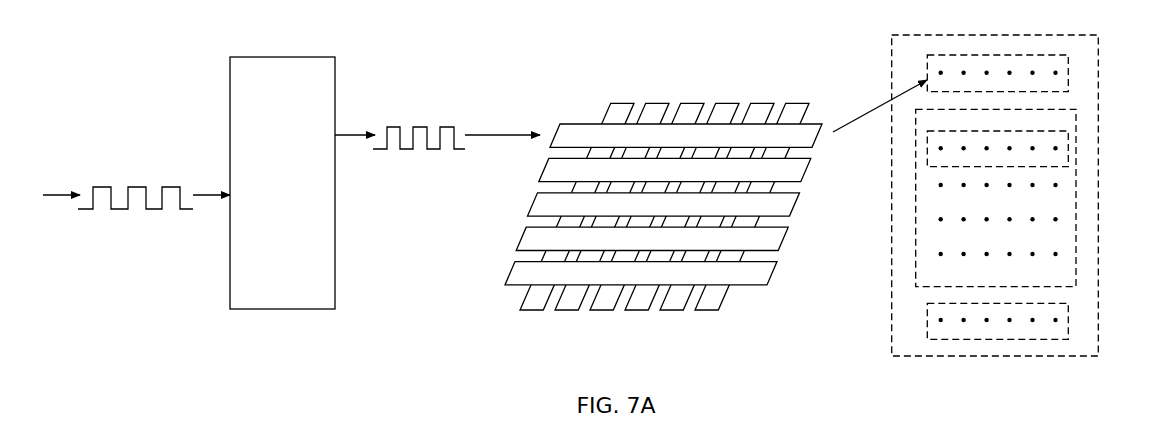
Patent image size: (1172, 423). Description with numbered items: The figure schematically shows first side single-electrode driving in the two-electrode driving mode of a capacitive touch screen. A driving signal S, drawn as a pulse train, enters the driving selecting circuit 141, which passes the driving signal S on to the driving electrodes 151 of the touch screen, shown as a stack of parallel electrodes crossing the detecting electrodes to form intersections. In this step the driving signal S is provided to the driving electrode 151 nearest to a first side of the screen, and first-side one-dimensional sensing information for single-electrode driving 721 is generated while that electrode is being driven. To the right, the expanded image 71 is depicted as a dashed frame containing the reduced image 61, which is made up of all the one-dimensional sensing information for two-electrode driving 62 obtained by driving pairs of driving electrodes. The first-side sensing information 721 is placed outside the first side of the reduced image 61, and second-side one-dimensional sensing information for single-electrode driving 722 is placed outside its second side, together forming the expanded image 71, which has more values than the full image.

The driving signal S is at (152, 217).
The driving selecting circuit 141 is at (282, 183).
The driving electrode 151 is at (576, 135).
The expanded image 71 is at (1007, 356).
The first-side 1D sensing information for single-electrode driving 721 is at (1068, 80).
The 1D sensing information for two-electrode driving 62 is at (1068, 157).
The reduced image 61 is at (1076, 242).
The second-side 1D sensing information for single-electrode driving 722 is at (1068, 327).